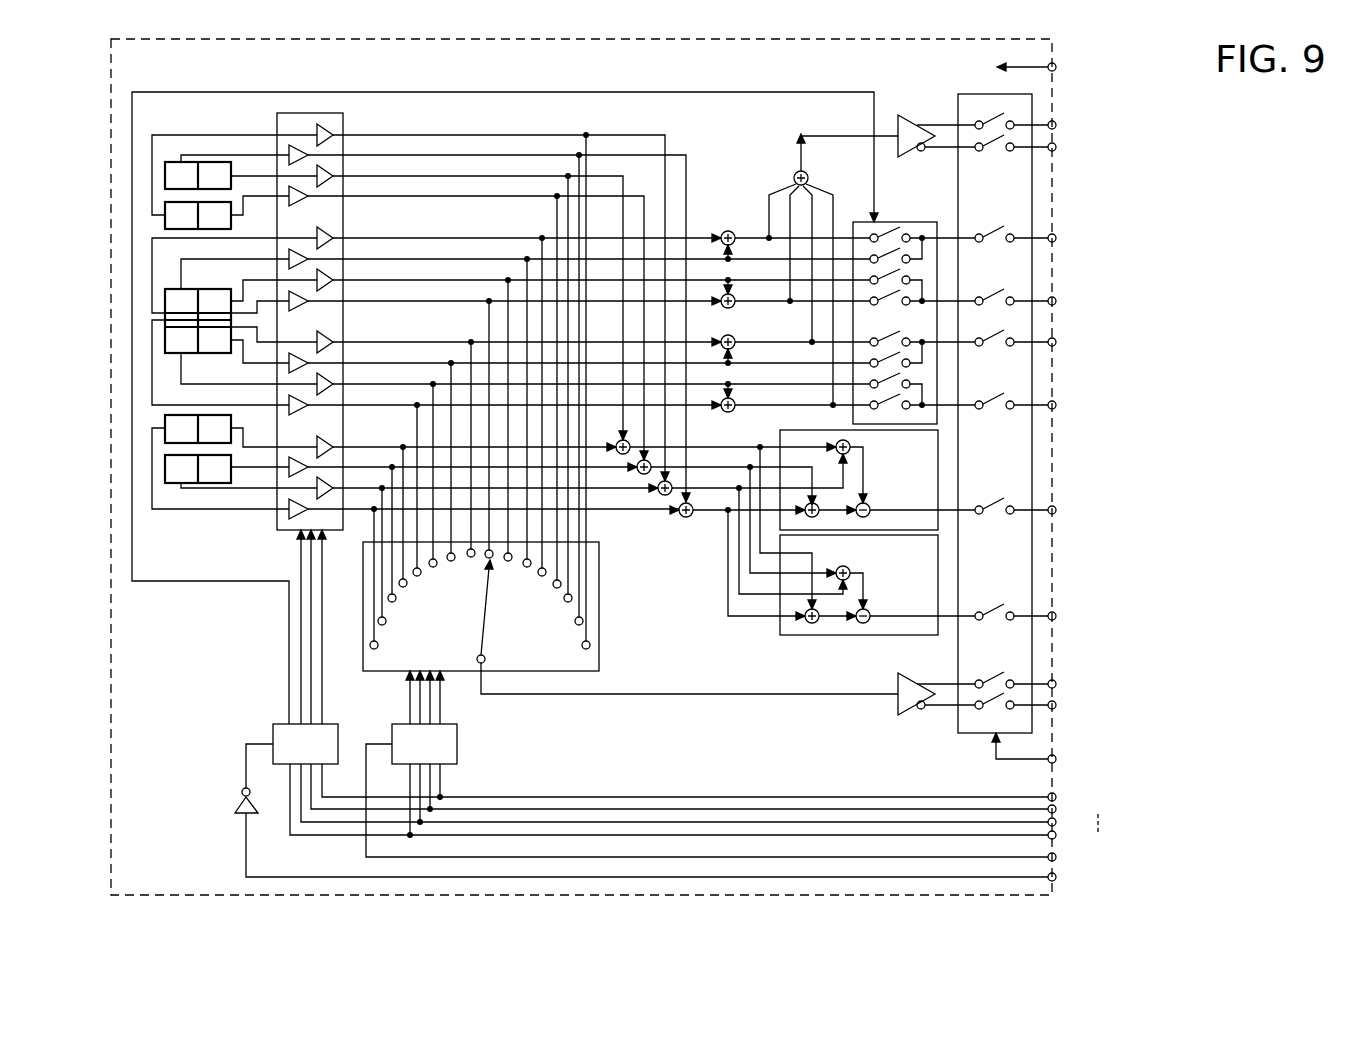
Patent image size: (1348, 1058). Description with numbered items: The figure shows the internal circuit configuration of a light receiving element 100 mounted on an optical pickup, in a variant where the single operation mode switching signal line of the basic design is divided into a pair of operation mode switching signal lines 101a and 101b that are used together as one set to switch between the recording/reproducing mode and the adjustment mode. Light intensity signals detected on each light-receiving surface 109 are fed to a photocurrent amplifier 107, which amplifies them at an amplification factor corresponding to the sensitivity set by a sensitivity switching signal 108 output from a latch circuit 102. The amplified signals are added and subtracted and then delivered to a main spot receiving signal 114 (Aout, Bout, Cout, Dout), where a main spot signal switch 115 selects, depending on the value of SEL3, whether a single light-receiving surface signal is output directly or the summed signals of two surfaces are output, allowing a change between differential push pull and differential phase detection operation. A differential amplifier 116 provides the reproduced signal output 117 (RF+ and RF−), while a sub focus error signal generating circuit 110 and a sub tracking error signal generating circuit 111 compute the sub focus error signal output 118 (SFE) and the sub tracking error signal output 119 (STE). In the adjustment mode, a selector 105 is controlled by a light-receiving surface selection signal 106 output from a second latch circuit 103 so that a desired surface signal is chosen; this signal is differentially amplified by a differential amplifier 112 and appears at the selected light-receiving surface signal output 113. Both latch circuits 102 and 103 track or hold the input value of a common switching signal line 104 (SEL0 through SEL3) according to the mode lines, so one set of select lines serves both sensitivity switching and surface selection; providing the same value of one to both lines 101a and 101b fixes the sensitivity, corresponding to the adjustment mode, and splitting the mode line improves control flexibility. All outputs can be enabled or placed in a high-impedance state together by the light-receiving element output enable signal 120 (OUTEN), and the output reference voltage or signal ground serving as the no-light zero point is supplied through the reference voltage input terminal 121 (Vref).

The light receiving element 100 is at (581, 467).
The operation mode switching signal line 101a is at (786, 809).
The operation mode switching signal line 101b is at (720, 820).
The latch circuit 102 is at (305, 744).
The latch circuit 103 is at (424, 744).
The common switching signal line 104 is at (1140, 790).
The selector 105 is at (481, 606).
The light-receiving surface selection signal 106 is at (397, 697).
The photocurrent amplifier 107 is at (345, 121).
The sensitivity switching signal 108 is at (283, 627).
The light-receiving surface 109 is at (234, 302).
The sub focus error signal generating circuit 110 is at (877, 480).
The sub tracking error signal generating circuit 111 is at (877, 585).
The differential amplifier 112 is at (896, 690).
The selected light-receiving surface signal output 113 is at (1180, 672).
The main spot receiving signal 114 is at (1125, 227).
The main spot signal switch 115 is at (880, 222).
The differential amplifier 116 is at (957, 100).
The reproduced signal output 117 is at (1128, 112).
The sub focus error signal output 118 is at (1120, 512).
The sub tracking error signal output 119 is at (1120, 616).
The light-receiving element output enable signal 120 is at (1155, 759).
The reference voltage input terminal 121 is at (1118, 68).